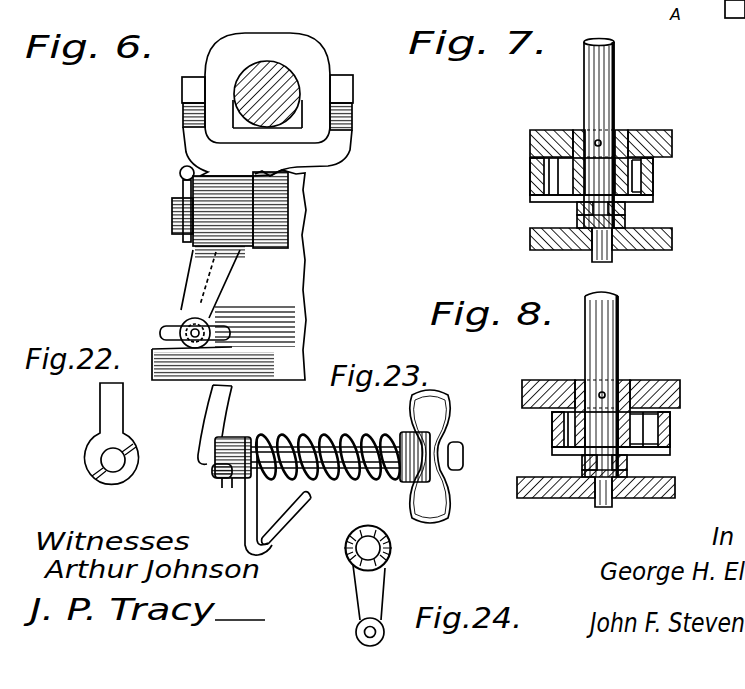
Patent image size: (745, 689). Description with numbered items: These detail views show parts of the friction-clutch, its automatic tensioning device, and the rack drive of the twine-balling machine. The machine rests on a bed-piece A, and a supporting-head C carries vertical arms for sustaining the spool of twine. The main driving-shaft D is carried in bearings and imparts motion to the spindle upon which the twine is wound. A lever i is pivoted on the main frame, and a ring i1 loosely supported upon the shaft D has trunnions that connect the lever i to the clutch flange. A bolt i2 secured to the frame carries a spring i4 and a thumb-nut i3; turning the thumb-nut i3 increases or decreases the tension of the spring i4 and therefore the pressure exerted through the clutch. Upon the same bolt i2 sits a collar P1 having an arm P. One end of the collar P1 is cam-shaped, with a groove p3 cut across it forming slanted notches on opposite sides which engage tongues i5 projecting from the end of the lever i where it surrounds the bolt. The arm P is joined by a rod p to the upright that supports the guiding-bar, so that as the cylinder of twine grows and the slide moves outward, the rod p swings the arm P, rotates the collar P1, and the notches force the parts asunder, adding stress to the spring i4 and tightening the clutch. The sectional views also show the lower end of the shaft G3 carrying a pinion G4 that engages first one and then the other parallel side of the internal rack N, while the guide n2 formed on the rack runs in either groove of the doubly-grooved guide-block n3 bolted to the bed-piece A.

In FIG. 6, the ring i1 is at (317, 53).
In FIG. 6, the main driving-shaft D is at (292, 53).
In FIG. 6, the lever i is at (262, 192).
In FIG. 22, the lever i is at (108, 433).
In FIG. 6, the supporting-head C is at (229, 275).
In FIG. 7, the supporting-head C is at (540, 130).
In FIG. 8, the supporting-head C is at (652, 380).
In FIG. 6, the spring i4 is at (210, 299).
In FIG. 23, the spring i4 is at (305, 442).
In FIG. 6, the thumb-nut i3 is at (166, 331).
In FIG. 23, the thumb-nut i3 is at (447, 404).
In FIG. 7, the shaft G3 is at (616, 83).
In FIG. 8, the shaft G3 is at (596, 343).
In FIG. 7, the pinion G4 is at (633, 174).
In FIG. 8, the pinion G4 is at (636, 426).
In FIG. 7, the internal rack N is at (530, 176).
In FIG. 8, the internal rack N is at (552, 431).
In FIG. 7, the guide n2 is at (577, 212).
In FIG. 8, the guide n2 is at (627, 462).
In FIG. 7, the doubly-grooved guide-block n3 is at (625, 213).
In FIG. 8, the doubly-grooved guide-block n3 is at (582, 468).
In FIG. 7, the bed-piece A is at (601, 250).
In FIG. 8, the bed-piece A is at (582, 499).
In FIG. 22, the tongues i5 is at (128, 456).
In FIG. 23, the tongues i5 is at (216, 478).
In FIG. 23, the collar P1 is at (238, 440).
In FIG. 24, the collar P1 is at (392, 548).
In FIG. 23, the bolt i2 is at (345, 470).
In FIG. 23, the arm P is at (246, 518).
In FIG. 24, the arm P is at (358, 597).
In FIG. 23, the rod p is at (286, 518).
In FIG. 23, the groove p3 is at (227, 482).
In FIG. 24, the groove p3 is at (356, 540).